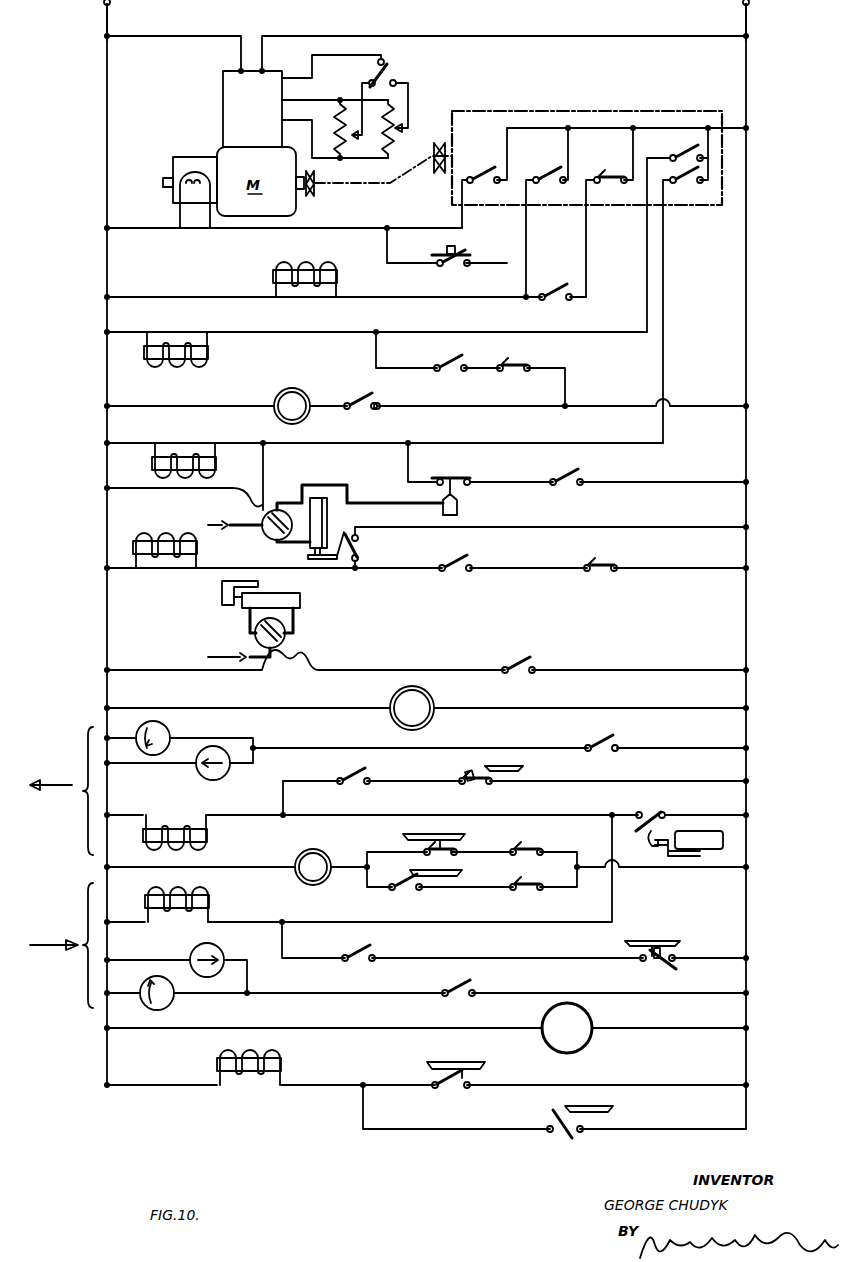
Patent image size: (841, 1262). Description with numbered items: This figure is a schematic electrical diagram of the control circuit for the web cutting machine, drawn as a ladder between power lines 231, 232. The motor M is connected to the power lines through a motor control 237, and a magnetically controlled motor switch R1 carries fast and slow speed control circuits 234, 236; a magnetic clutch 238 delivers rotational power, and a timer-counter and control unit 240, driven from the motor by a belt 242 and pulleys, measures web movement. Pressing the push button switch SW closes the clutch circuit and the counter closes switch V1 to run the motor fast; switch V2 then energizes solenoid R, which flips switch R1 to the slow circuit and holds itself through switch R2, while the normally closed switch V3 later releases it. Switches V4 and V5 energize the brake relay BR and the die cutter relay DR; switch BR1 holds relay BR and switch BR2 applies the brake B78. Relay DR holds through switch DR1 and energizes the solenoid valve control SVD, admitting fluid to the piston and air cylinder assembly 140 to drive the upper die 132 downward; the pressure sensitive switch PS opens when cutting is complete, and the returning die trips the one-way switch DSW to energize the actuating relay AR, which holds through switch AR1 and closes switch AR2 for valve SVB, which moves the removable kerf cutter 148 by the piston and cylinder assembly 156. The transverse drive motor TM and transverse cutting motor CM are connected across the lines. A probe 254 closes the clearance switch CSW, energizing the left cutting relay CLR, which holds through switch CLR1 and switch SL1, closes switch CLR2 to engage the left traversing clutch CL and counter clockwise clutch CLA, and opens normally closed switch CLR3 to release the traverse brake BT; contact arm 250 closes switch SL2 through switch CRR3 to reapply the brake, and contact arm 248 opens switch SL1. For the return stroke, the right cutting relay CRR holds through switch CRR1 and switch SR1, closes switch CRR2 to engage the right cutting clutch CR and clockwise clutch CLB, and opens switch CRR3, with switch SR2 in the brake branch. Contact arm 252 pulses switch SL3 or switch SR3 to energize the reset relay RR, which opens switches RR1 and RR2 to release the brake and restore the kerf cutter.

The power line 231 is at (103, 8).
The power line 232 is at (750, 8).
The motor control 237 is at (222, 80).
The fast speed control circuit 234 is at (360, 82).
The slow speed control circuit 236 is at (412, 84).
The magnetic clutch 238 is at (188, 156).
The timer-counter and control unit 240 is at (582, 108).
The belt 242 is at (390, 186).
The piston and air cylinder assembly 140 is at (322, 500).
The upper die 132 is at (321, 560).
The removable kerf cutter 148 is at (220, 598).
The piston and cylinder assembly 156 is at (234, 620).
The contact arm 248 is at (526, 770).
The switch contact arm 250 is at (436, 832).
The contact arm 252 is at (446, 1064).
The probe 254 is at (648, 846).
The motor switch R1 is at (388, 64).
The internal switch V1 is at (484, 178).
The second switch V2 is at (547, 212).
The normally closed switch V3 is at (609, 212).
The switch V4 is at (677, 230).
The switch V5 is at (687, 300).
The push button switch SW is at (455, 252).
The solenoid R is at (280, 272).
The switch R2 is at (555, 282).
The brake relay BR is at (180, 325).
The switch BR1 is at (461, 355).
The relay control switch RR1 is at (522, 355).
The brake B78 is at (293, 388).
The switch BR2 is at (375, 394).
The die cutter relay DR is at (186, 435).
The pressure sensitive switch PS is at (456, 476).
The holding switch DR1 is at (581, 471).
The solenoid valve control SVD is at (266, 536).
The one-way switch DSW is at (359, 553).
The actuating relay AR is at (165, 566).
The switch AR1 is at (468, 557).
The solenoid control switch RR2 is at (613, 555).
The valve SVB is at (290, 633).
The second switch AR2 is at (526, 654).
The transverse drive motor TM is at (412, 708).
The counter clockwise rotation clutch CLA is at (168, 734).
The left traversing clutch CL is at (226, 774).
The relay control switch CLR1 is at (370, 771).
The relay control switch CLR2 is at (620, 736).
The switch SL1 is at (486, 789).
The left cutting relay CLR is at (162, 812).
The clearance switch CSW is at (650, 812).
The switch SR2 is at (456, 848).
The normally closed switch CLR3 is at (535, 841).
The traverse brake BT is at (313, 853).
The switch SL2 is at (409, 891).
The normally closed relay control switch CRR3 is at (535, 894).
The right cutting relay CRR is at (202, 900).
The switch CRR1 is at (380, 948).
The switch SR1 is at (650, 966).
The right cutting clutch CR is at (220, 950).
The switch CRR2 is at (479, 981).
The clockwise rotation clutch CLB is at (166, 1006).
The transverse cutting motor CM is at (578, 1038).
The reset relay RR is at (236, 1088).
The switch SR3 is at (447, 1097).
The switch SL3 is at (564, 1136).